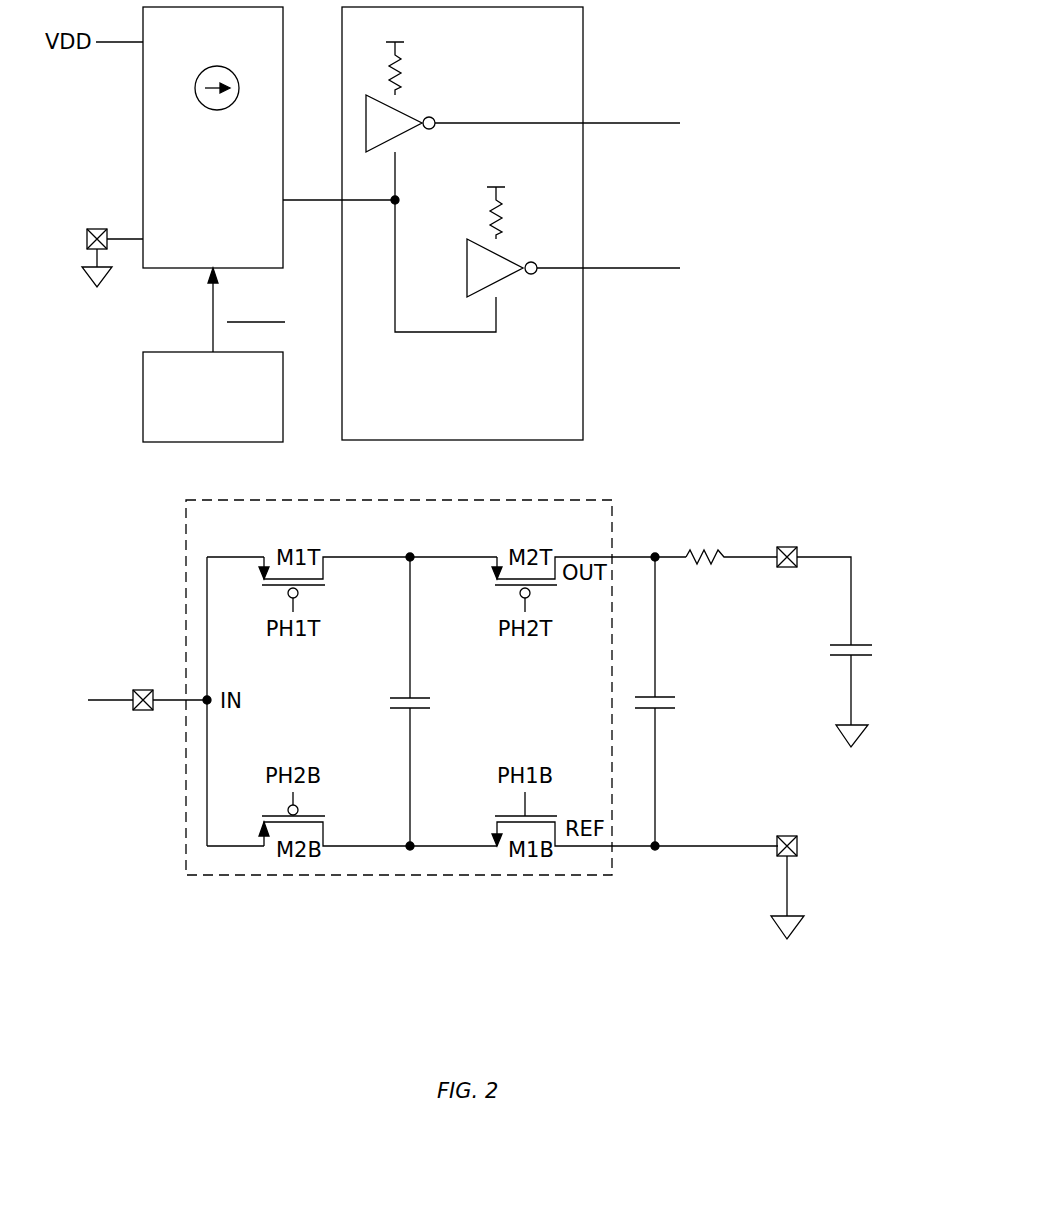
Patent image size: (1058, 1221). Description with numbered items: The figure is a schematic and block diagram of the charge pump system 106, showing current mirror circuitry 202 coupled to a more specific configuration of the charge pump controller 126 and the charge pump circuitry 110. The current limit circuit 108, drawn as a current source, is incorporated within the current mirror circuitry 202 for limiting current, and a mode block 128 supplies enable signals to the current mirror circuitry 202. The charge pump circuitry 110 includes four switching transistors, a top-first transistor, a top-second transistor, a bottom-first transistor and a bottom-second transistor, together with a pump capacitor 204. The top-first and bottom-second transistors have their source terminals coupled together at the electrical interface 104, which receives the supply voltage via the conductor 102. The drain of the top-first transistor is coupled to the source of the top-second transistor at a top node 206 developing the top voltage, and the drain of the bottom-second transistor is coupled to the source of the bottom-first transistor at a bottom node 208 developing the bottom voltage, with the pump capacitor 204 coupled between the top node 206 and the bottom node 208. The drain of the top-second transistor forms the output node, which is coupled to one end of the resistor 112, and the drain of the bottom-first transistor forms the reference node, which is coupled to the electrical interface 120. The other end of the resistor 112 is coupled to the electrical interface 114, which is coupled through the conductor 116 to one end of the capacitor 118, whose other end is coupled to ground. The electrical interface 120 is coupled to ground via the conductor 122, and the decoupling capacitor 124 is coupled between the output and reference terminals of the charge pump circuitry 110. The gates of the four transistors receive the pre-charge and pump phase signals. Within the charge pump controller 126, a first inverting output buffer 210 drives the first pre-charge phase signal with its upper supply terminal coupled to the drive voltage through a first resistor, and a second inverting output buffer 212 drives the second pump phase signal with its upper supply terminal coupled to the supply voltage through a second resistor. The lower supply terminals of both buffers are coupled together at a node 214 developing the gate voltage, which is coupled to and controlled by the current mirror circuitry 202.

The conductor 102 is at (136, 690).
The electrical interface 104 is at (140, 710).
The charge pump system 106 is at (782, 410).
The current limit circuit 108 is at (217, 66).
The charge pump circuitry 110 is at (186, 558).
The resistor 112 is at (705, 549).
The electrical interface 114 is at (787, 568).
The conductor 116 is at (851, 592).
The capacitor 118 is at (851, 668).
The electrical interface 120 is at (87, 240).
The conductor 122 is at (787, 884).
The CDEC capacitor 124 is at (664, 696).
The charge pump controller 126 is at (583, 80).
The mode 128 is at (197, 424).
The current mirror circuitry 202 is at (197, 251).
The pump capacitor 204 is at (425, 697).
The top node 206 is at (410, 555).
The bottom node 208 is at (412, 844).
The first inverting output buffer 210 is at (400, 137).
The second inverting output buffer 212 is at (503, 279).
The node 214 is at (398, 203).